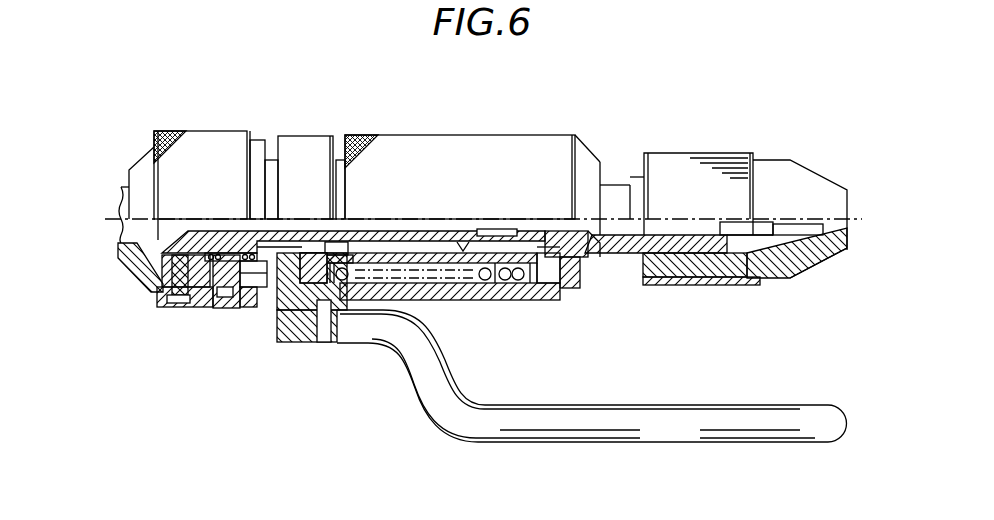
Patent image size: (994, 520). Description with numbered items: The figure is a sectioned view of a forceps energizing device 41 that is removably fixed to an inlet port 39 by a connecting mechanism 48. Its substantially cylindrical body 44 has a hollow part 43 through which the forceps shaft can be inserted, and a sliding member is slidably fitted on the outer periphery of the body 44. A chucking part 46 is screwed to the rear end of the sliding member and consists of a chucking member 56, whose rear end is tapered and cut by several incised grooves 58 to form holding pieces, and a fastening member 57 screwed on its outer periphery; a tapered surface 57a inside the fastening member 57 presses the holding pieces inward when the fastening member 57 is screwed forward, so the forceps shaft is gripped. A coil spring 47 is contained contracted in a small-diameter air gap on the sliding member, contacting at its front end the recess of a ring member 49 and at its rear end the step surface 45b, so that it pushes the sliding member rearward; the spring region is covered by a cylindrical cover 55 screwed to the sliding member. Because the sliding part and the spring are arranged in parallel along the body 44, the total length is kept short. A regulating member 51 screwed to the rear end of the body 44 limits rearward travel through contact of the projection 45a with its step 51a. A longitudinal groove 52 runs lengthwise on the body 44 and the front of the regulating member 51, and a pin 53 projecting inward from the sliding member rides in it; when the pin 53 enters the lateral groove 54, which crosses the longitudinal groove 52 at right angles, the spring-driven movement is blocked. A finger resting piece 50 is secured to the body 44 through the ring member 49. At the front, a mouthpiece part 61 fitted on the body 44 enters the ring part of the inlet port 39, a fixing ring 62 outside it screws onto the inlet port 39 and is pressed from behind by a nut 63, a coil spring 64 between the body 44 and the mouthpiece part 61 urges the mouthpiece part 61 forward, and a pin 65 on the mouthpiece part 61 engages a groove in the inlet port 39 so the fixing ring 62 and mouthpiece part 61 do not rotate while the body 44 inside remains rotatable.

The inlet port 39 is at (150, 165).
The forceps energizing device 41 is at (556, 124).
The hollow part 43 is at (443, 226).
The body 44 is at (424, 230).
The projection 45a is at (360, 256).
The step surface 45b is at (521, 252).
The chucking part 46 is at (739, 150).
The coil spring 47 is at (517, 287).
The connecting mechanism 48 is at (208, 316).
The ring member 49 is at (315, 305).
The finger resting piece 50 is at (658, 418).
The regulating member 51 is at (562, 226).
The step 51a is at (542, 288).
The longitudinal groove 52 is at (463, 246).
The pin 53 is at (330, 240).
The lateral groove 54 is at (338, 254).
The cylindrical cover 55 is at (452, 292).
The chucking member 56 is at (685, 247).
The fastening member 57 is at (786, 160).
The tapered surface 57a is at (794, 244).
The incised grooves 58 is at (733, 244).
The mouthpiece part 61 is at (151, 288).
The fixing ring 62 is at (222, 160).
The nut 63 is at (258, 302).
The coil spring 64 is at (218, 255).
The pin 65 is at (183, 295).